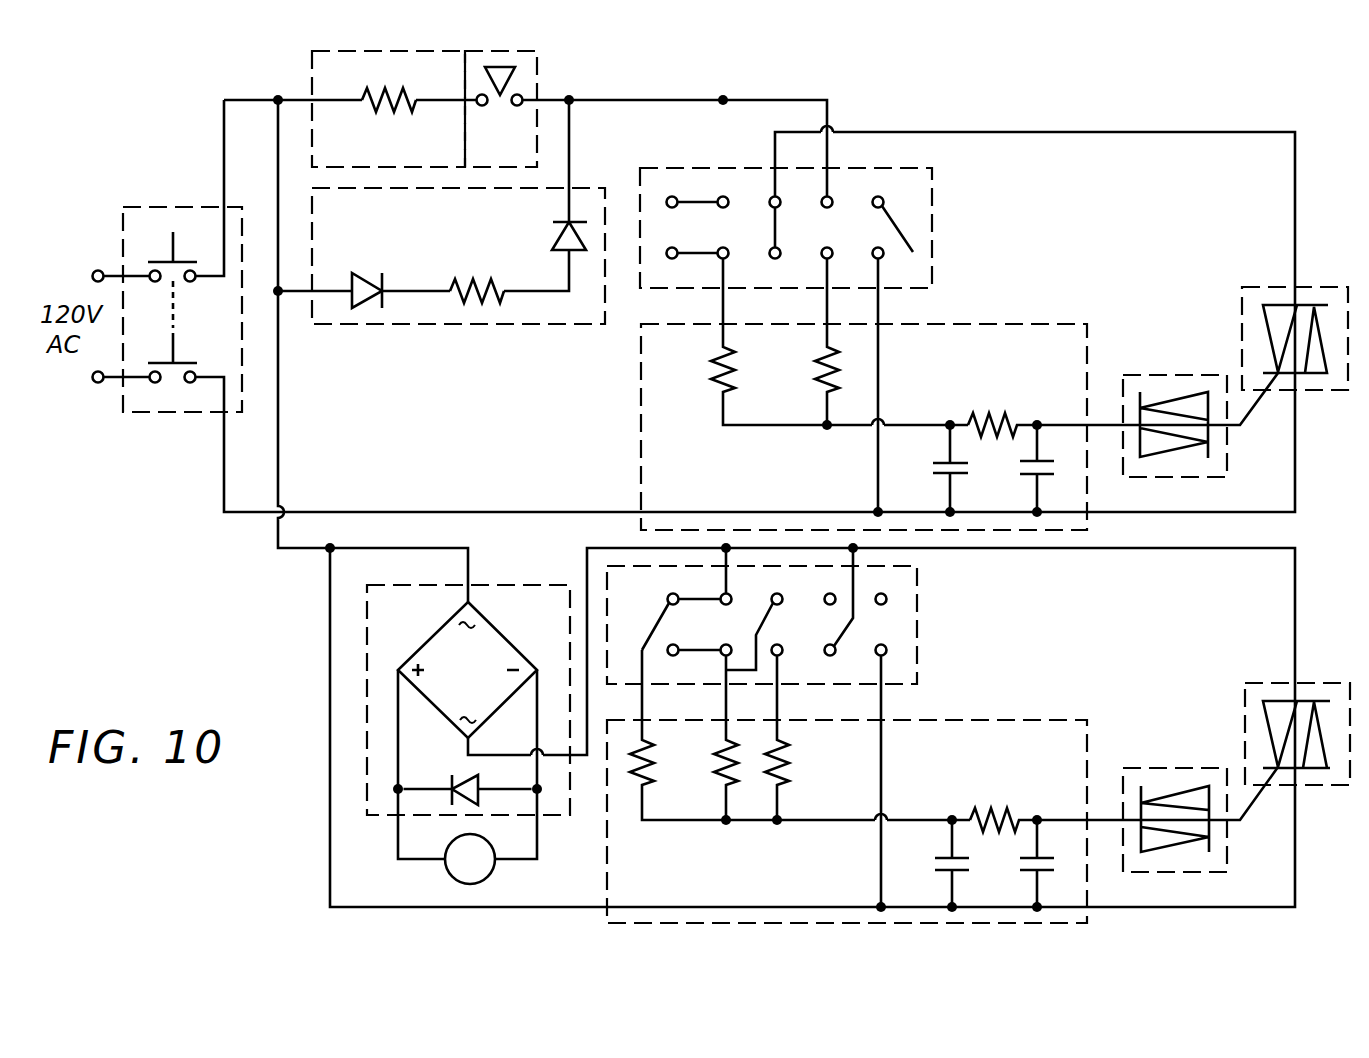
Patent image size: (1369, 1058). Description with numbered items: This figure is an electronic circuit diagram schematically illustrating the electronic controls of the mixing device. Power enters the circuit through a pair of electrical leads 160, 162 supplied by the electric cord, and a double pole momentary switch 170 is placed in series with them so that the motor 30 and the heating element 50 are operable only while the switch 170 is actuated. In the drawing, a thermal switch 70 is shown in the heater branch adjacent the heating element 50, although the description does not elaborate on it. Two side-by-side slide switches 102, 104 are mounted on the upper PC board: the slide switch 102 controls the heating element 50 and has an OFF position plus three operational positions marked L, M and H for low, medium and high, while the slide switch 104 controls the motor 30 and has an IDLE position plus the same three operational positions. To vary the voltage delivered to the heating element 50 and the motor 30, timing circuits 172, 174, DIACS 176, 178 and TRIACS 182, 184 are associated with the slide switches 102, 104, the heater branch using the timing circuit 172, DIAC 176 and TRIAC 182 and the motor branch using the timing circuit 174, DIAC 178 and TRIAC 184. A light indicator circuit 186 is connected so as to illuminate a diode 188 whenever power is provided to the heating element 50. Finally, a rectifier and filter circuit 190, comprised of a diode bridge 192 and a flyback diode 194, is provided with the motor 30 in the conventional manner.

The motor 30 is at (492, 876).
The heating element 50 is at (342, 73).
The thermostat switch 70 is at (533, 73).
The slide switch 102 is at (913, 213).
The slide switch 104 is at (917, 625).
The electrical lead 160 is at (112, 273).
The electrical lead 162 is at (112, 381).
The double pole momentary switch 170 is at (158, 220).
The timing circuit 172 is at (1012, 336).
The timing circuit 174 is at (970, 727).
The DIAC 176 is at (1178, 378).
The DIAC 178 is at (1177, 768).
The TRIAC 182 is at (1262, 294).
The TRIAC 184 is at (1262, 688).
The light indicator circuit 186 is at (442, 314).
The diode 188 is at (555, 231).
The rectifier and filter circuit 190 is at (367, 645).
The diode bridge 192 is at (455, 620).
The flyback diode 194 is at (463, 773).